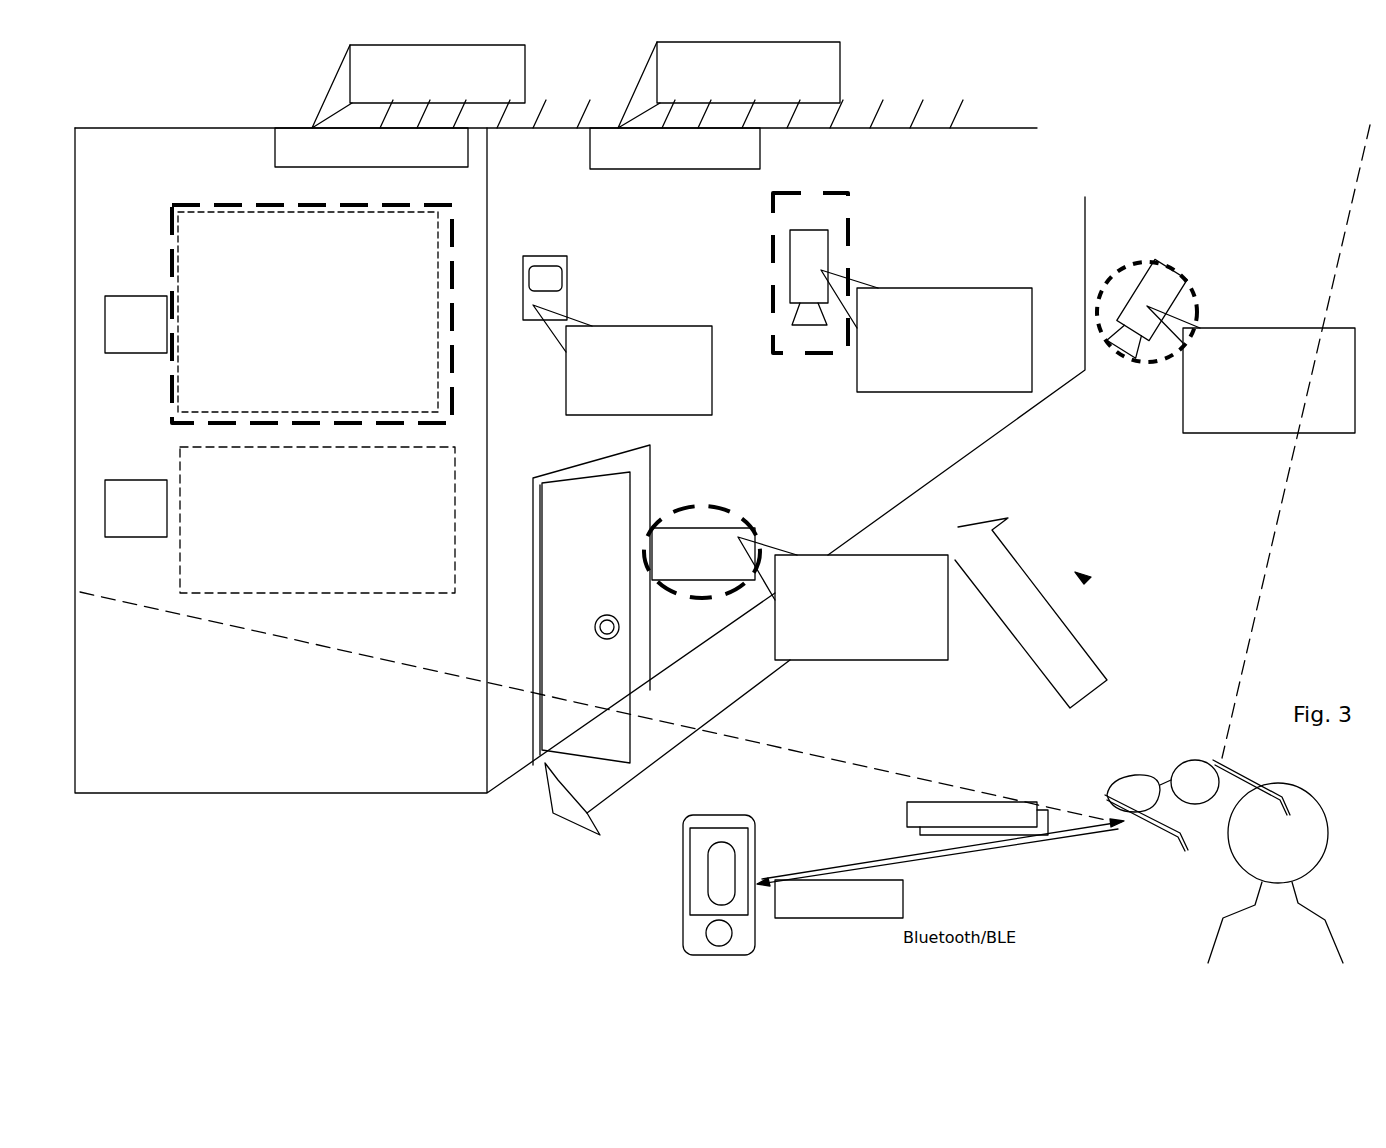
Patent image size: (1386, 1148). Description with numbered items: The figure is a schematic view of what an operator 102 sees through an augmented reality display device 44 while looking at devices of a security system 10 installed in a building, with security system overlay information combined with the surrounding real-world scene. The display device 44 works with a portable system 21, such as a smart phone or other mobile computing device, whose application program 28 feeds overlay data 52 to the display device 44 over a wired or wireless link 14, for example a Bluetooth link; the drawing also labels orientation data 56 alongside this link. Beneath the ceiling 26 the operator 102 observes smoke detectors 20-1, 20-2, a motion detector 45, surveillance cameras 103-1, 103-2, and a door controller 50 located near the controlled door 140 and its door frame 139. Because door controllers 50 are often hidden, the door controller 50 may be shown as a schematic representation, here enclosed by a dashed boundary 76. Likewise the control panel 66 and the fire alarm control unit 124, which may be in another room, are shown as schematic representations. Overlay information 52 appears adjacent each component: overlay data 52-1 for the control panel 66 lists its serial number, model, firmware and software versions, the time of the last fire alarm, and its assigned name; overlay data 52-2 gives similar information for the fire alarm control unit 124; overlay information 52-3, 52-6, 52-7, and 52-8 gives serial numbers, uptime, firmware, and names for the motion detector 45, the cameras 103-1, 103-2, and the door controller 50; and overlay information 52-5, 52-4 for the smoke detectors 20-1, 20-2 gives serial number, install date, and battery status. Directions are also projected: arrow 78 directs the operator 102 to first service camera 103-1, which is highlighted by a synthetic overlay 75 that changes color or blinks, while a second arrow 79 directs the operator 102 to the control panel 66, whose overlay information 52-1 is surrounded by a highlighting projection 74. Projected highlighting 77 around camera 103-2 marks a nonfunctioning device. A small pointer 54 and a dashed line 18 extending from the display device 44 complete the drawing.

The security system 10 is at (181, 113).
The ceiling 26 is at (1010, 128).
The smoke detector 20-1 is at (675, 148).
The smoke detector 20-2 is at (371, 147).
The overlay information 52-4 is at (487, 92).
The overlay information 52-5 is at (780, 88).
The highlighting projection 74 is at (253, 207).
The overlay data 52-1 is at (220, 240).
The control panel 66 is at (136, 324).
The fire alarm control unit 124 is at (136, 508).
The overlay data 52-2 is at (320, 537).
The motion detector 45 is at (568, 282).
The overlay information 52-3 is at (620, 336).
The synthetic overlay 75 is at (773, 238).
The surveillance camera 103-1 is at (829, 273).
The overlay information 52-6 is at (912, 382).
The projected highlighting 77 is at (1198, 290).
The surveillance camera 103-2 is at (1180, 272).
The overlay information 52-7 is at (1190, 388).
The door 139 is at (650, 490).
The controlled door 140 is at (565, 727).
The arrow 79 is at (733, 702).
The highlight of door controller 76 is at (748, 520).
The door controller 50 is at (703, 554).
The overlay information 52-8 is at (787, 640).
The arrow 78 is at (1017, 565).
The pointer 54 is at (1086, 581).
The line of sight 18 is at (1264, 576).
The operator 102 is at (1218, 935).
The display device 44 is at (1140, 772).
The portable system 21 is at (683, 926).
The application program 28 is at (733, 855).
The wired or wireless link 14 is at (950, 852).
The overlay data 52 is at (977, 818).
The orientation data 56 is at (839, 899).